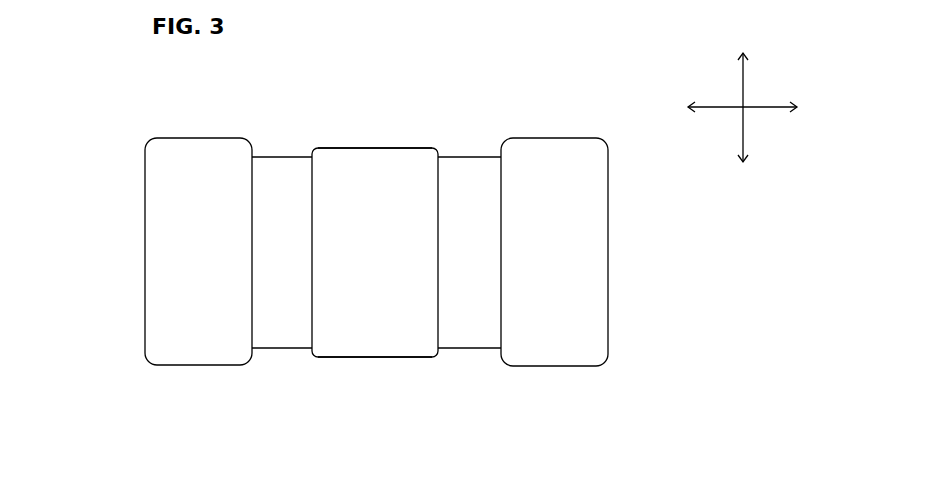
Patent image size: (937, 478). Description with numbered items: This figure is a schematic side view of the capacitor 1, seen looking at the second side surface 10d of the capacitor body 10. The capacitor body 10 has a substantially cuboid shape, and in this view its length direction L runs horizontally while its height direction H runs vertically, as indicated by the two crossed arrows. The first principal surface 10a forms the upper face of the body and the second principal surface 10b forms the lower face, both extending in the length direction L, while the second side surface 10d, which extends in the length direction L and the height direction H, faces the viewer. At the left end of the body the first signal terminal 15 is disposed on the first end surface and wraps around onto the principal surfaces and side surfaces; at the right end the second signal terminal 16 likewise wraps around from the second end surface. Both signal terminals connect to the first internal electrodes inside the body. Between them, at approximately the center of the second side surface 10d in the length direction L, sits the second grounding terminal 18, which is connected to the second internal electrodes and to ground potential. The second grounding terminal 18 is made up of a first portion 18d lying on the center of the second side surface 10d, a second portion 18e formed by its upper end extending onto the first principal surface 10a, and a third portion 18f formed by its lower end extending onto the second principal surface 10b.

The capacitor 1 is at (615, 119).
The capacitor body 10 is at (386, 255).
The first principal surface 10a is at (470, 157).
The second principal surface 10b is at (278, 348).
The second side surface 10d is at (282, 173).
The first signal terminal 15 is at (145, 278).
The second signal terminal 16 is at (611, 330).
The second grounding terminal 18 is at (479, 257).
The first portion 18d is at (402, 270).
The second portion 18e is at (355, 148).
The third portion 18f is at (358, 357).
The height direction H is at (743, 80).
The length direction L is at (768, 107).